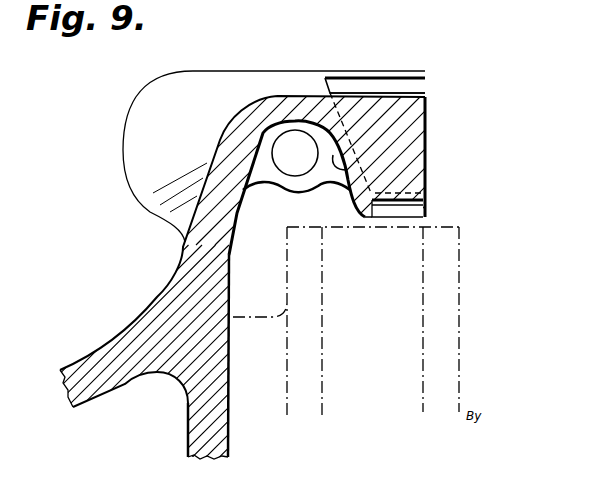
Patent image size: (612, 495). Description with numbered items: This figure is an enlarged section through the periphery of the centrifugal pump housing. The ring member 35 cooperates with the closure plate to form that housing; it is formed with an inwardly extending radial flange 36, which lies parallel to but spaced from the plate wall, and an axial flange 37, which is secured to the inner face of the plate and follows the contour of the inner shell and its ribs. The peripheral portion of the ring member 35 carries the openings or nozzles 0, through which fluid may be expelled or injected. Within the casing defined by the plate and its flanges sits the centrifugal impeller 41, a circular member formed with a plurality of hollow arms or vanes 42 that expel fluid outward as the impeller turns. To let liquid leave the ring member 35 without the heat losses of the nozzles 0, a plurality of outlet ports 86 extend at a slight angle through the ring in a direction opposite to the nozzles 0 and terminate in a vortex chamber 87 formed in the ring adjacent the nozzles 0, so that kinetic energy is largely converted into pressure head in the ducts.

The ring member 35 is at (159, 292).
The inwardly extending radial flange 36 is at (188, 440).
The axial flange 37 is at (396, 71).
The openings or nozzles 0 is at (388, 87).
The outlet ports 86 is at (295, 153).
The vortex chamber 87 is at (341, 165).
The hollow arms or vanes 42 is at (424, 250).
The centrifugal impeller 41 is at (462, 249).